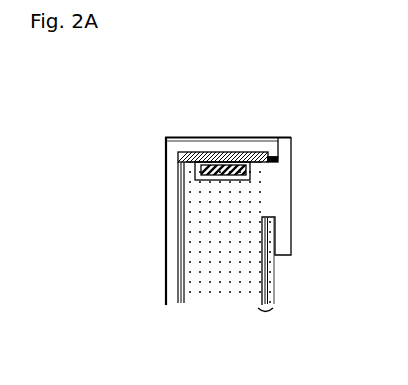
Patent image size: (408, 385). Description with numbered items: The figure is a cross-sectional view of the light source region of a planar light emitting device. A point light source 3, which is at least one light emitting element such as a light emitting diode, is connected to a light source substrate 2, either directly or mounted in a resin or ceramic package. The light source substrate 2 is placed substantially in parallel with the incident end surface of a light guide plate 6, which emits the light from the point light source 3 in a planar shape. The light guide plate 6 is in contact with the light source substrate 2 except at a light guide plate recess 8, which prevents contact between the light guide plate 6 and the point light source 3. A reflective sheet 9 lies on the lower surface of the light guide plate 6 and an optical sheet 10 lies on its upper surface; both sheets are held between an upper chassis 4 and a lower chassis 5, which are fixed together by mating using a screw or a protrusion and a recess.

The light source substrate 2 is at (249, 152).
The point light source 3 is at (211, 162).
The upper chassis 4 is at (292, 256).
The lower chassis 5 is at (214, 137).
The light guide plate 6 is at (206, 287).
The light guide plate recess 8 is at (205, 181).
The reflective sheet 9 is at (182, 307).
The optical sheet 10 is at (266, 317).